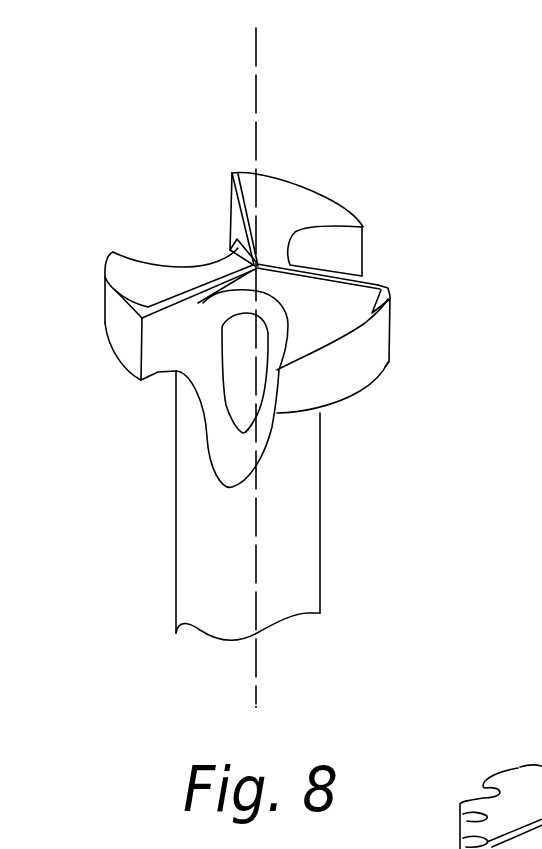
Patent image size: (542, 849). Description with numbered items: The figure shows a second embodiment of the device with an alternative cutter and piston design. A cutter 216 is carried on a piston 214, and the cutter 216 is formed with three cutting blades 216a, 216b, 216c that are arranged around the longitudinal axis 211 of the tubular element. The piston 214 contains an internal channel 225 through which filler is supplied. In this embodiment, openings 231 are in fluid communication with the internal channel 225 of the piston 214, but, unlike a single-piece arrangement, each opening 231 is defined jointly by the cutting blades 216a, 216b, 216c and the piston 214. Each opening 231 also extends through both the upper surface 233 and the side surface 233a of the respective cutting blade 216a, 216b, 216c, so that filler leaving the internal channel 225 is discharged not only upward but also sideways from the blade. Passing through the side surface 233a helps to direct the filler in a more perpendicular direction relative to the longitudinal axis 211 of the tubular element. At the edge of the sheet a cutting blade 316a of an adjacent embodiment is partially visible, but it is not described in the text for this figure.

The longitudinal axis 211 is at (257, 43).
The piston 214 is at (297, 532).
The cutter 216 is at (290, 197).
The cutting blade 216a is at (129, 345).
The cutting blade 216b is at (344, 313).
The cutting blade 216c is at (323, 213).
The internal channel 225 is at (232, 326).
The openings 231 is at (237, 393).
The upper surface 233 is at (307, 342).
The side surface 233a is at (333, 377).
The cutting lobe of adjacent figure 316a is at (520, 770).